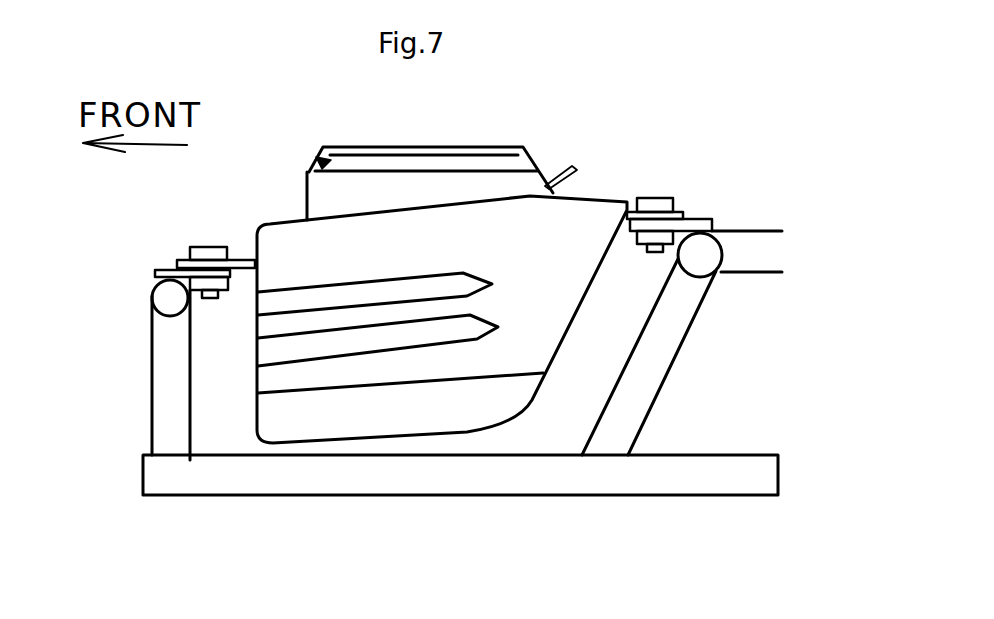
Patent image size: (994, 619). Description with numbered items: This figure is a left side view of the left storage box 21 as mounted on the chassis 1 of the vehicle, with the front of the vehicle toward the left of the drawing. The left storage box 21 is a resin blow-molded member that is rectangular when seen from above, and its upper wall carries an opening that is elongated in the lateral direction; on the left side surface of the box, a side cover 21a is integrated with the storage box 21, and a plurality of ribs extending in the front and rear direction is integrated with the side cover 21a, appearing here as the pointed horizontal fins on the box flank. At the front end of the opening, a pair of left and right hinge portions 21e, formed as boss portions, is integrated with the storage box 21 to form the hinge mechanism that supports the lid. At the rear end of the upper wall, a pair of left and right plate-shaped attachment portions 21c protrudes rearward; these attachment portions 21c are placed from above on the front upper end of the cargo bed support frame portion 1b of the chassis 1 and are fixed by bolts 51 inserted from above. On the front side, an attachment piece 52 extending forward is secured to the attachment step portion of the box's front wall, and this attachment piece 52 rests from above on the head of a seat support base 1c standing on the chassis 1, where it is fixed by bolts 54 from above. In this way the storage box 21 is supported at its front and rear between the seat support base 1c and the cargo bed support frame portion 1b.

The chassis 1 is at (668, 478).
The cargo bed support frame portion 1b is at (747, 253).
The seat support base 1c is at (170, 374).
The left storage box 21 is at (330, 202).
The side cover 21a is at (530, 325).
The attachment portions 21c is at (690, 225).
The hinge portions 21e is at (318, 158).
The bolts 51 is at (658, 205).
The attachment piece 52 is at (180, 262).
The bolts 54 is at (205, 247).